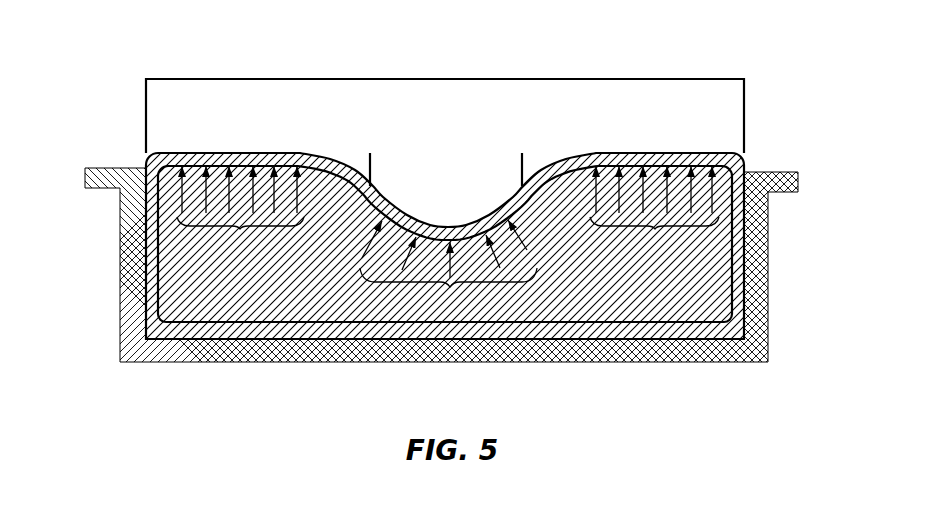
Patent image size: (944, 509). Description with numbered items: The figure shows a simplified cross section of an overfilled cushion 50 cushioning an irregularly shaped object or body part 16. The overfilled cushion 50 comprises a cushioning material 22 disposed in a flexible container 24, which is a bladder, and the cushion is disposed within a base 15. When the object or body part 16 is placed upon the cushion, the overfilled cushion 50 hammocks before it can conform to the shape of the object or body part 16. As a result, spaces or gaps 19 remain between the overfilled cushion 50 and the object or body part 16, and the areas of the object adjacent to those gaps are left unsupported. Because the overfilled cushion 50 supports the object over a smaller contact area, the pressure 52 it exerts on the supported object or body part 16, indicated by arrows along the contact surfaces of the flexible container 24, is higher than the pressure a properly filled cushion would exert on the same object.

The base 15 is at (628, 395).
The object or body part 16 is at (728, 107).
The spaces or gaps 19 is at (357, 163).
The cushioning material 22 is at (653, 297).
The flexible container 24 is at (745, 165).
The overfilled cushion 50 is at (113, 155).
The pressure 52 is at (448, 241).